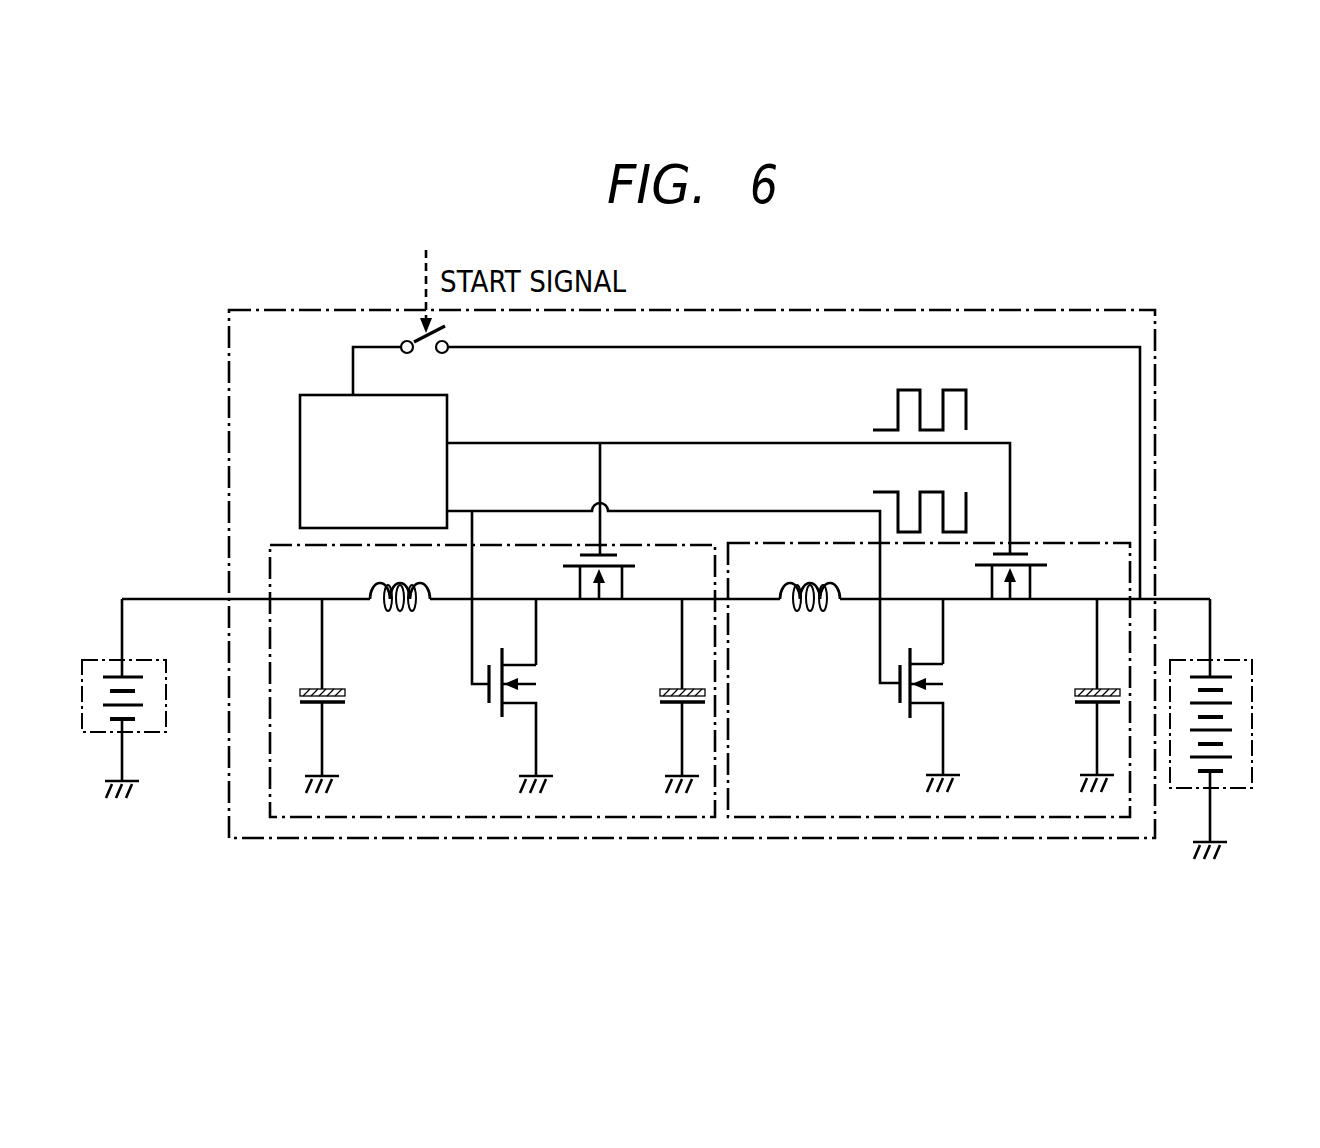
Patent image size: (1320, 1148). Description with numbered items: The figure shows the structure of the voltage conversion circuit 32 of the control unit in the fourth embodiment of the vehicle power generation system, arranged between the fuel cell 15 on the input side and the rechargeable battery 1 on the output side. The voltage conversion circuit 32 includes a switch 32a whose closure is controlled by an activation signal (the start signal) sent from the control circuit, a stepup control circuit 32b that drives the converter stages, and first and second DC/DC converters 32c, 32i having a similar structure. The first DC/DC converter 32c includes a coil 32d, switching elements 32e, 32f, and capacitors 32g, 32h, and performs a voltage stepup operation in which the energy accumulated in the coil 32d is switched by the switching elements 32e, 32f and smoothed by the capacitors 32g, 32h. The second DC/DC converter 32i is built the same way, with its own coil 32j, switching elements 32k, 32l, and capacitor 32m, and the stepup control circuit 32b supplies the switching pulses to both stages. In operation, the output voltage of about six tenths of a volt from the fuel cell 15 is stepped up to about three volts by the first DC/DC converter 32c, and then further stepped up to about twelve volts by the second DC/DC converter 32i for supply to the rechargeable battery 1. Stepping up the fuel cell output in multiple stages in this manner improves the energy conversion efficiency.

The rechargeable battery 1 is at (1235, 660).
The fuel cell 15 is at (100, 660).
The voltage conversion circuit 32 is at (220, 371).
The switch 32a is at (418, 340).
The stepup control circuit 32b is at (300, 463).
The first DC/DC converter 32c is at (448, 817).
The coil 32d is at (395, 612).
The switching element 32e is at (488, 697).
The switching element 32f is at (578, 572).
The capacitor 32g is at (305, 703).
The capacitor 32h is at (667, 705).
The second DC/DC converter 32i is at (860, 817).
The coil 32j is at (803, 612).
The switching element 32k is at (898, 692).
The switching element 32l is at (988, 577).
The capacitor 32m is at (1080, 707).